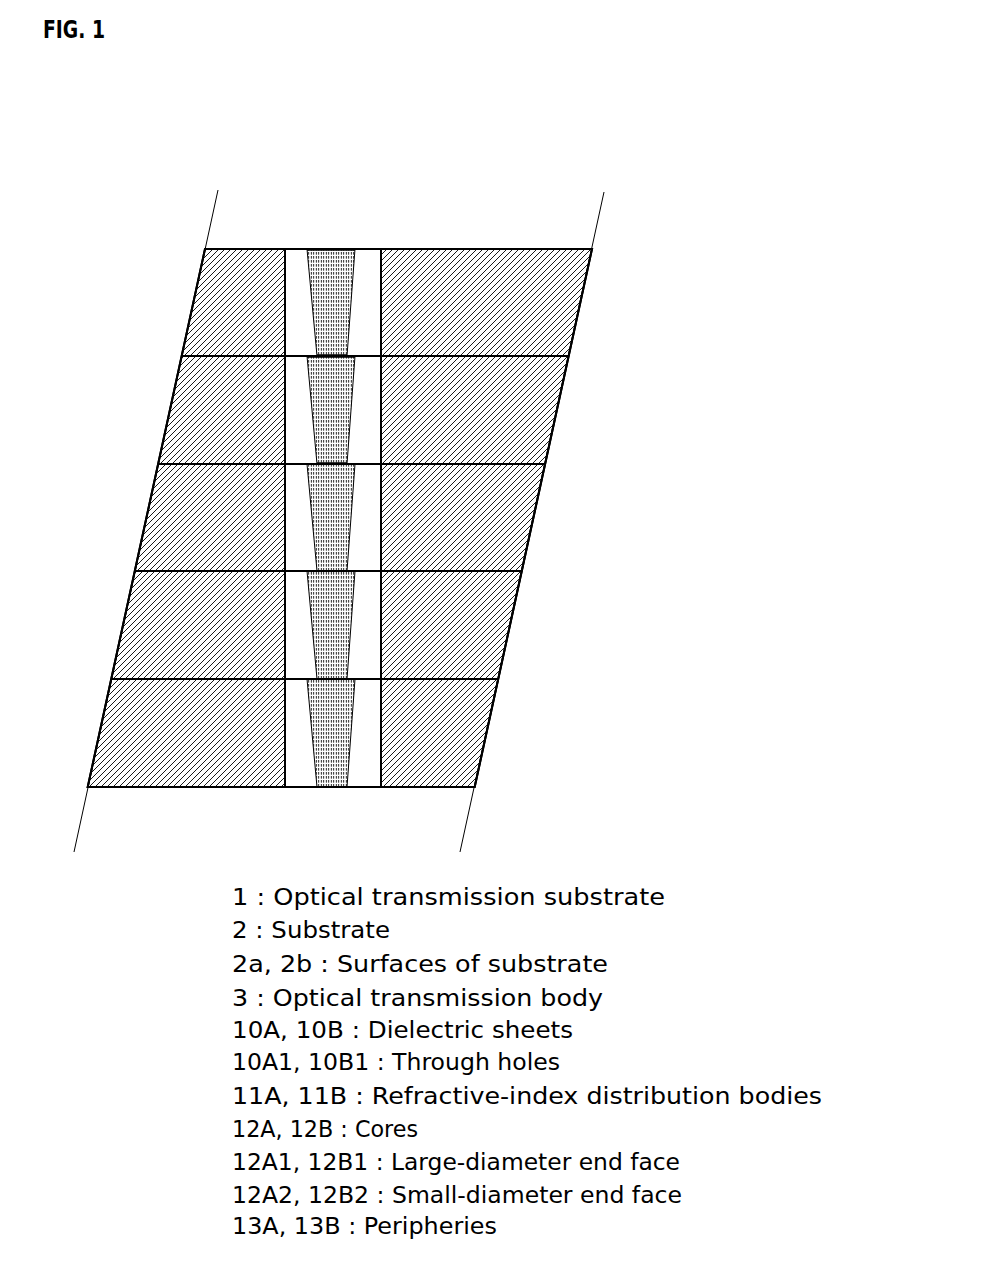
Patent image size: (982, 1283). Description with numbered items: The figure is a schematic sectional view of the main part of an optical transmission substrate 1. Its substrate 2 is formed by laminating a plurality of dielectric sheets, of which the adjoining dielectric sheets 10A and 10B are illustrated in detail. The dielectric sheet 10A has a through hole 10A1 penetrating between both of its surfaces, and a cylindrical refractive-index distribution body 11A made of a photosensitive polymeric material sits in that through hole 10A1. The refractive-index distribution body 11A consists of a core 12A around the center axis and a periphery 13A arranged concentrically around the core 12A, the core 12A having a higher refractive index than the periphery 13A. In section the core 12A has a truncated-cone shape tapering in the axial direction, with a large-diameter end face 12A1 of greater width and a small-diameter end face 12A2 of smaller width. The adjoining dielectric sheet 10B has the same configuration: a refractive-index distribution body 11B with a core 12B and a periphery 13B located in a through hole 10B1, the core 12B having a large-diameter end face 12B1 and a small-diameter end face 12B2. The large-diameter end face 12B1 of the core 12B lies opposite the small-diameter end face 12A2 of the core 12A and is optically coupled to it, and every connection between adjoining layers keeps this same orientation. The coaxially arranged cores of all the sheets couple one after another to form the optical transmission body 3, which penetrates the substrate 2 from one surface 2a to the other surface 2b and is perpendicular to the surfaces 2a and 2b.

The optical transmission substrate 1 is at (468, 135).
The substrate 2 is at (535, 237).
The surface of substrate 2a is at (467, 248).
The surface of substrate 2b is at (163, 787).
The optical transmission body 3 is at (383, 590).
The dielectric sheet 10A is at (222, 282).
The dielectric sheet 10B is at (198, 374).
The through hole 10A1 is at (283, 308).
The through hole 10B1 is at (283, 388).
The refractive-index distribution body 11A is at (386, 292).
The refractive-index distribution body 11B is at (386, 435).
The core 12A is at (322, 288).
The core 12B is at (294, 410).
The large-diameter end face 12A1 is at (323, 248).
The large-diameter end face 12B1 is at (358, 363).
The small-diameter end face 12A2 is at (333, 353).
The small-diameter end face 12B2 is at (355, 468).
The periphery 13A is at (290, 330).
The periphery 13B is at (292, 438).